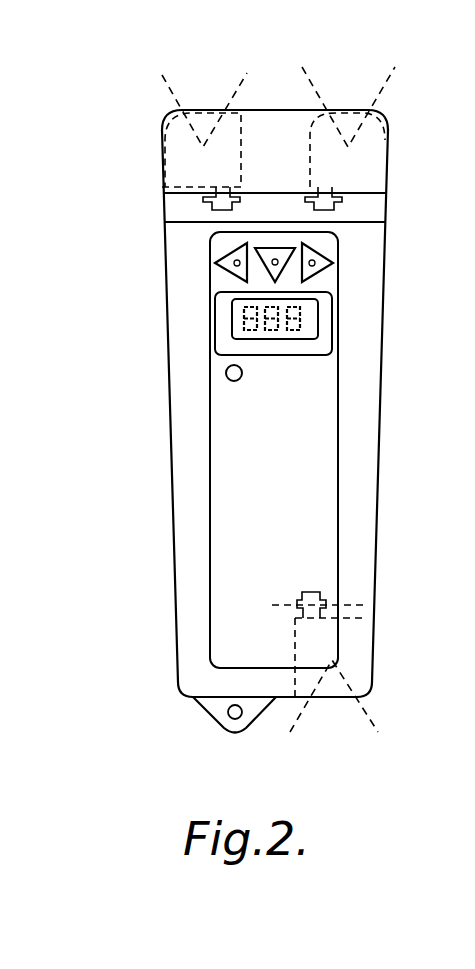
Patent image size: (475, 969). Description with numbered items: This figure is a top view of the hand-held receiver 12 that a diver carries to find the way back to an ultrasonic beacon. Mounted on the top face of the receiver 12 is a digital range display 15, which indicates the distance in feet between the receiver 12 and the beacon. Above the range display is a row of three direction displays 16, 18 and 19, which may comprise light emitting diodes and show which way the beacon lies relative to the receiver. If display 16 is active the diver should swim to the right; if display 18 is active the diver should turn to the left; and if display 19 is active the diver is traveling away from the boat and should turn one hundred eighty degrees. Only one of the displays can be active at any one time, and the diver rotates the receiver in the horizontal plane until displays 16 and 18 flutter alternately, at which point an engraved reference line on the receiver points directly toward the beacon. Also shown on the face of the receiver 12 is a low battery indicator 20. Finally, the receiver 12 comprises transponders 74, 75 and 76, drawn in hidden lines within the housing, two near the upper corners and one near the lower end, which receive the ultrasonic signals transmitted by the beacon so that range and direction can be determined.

The receiver 12 is at (167, 467).
The digital range display 15 is at (325, 332).
The display 16 is at (323, 272).
The display 18 is at (215, 264).
The display 19 is at (268, 248).
The low battery indicator 20 is at (232, 382).
The transponder 74 is at (376, 122).
The transponder 75 is at (173, 118).
The transponder 76 is at (366, 683).